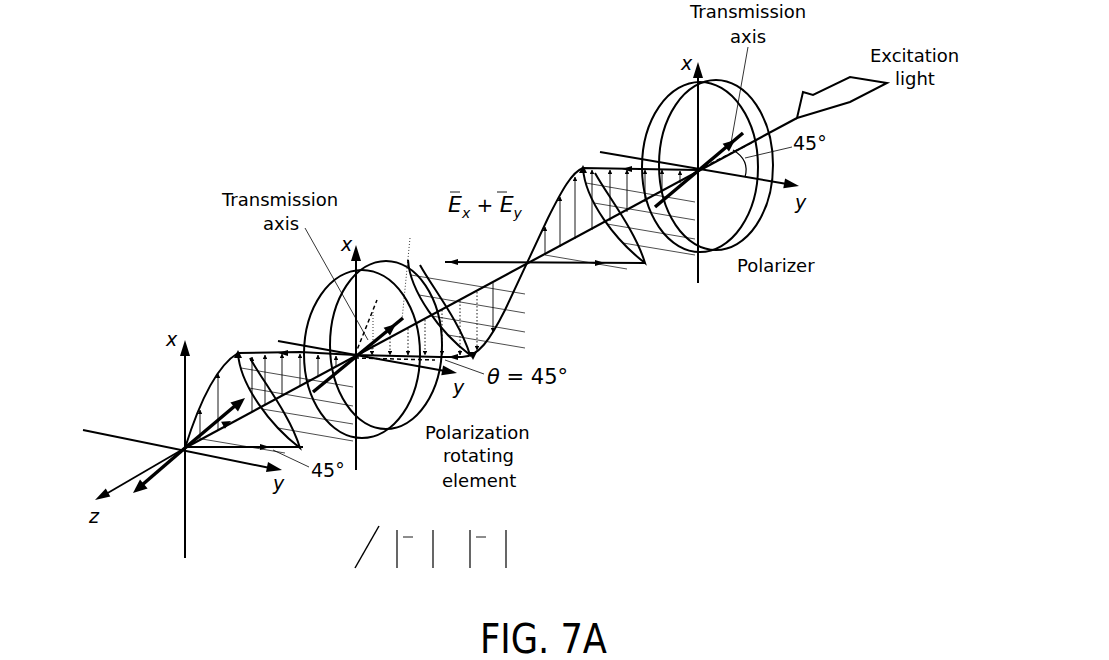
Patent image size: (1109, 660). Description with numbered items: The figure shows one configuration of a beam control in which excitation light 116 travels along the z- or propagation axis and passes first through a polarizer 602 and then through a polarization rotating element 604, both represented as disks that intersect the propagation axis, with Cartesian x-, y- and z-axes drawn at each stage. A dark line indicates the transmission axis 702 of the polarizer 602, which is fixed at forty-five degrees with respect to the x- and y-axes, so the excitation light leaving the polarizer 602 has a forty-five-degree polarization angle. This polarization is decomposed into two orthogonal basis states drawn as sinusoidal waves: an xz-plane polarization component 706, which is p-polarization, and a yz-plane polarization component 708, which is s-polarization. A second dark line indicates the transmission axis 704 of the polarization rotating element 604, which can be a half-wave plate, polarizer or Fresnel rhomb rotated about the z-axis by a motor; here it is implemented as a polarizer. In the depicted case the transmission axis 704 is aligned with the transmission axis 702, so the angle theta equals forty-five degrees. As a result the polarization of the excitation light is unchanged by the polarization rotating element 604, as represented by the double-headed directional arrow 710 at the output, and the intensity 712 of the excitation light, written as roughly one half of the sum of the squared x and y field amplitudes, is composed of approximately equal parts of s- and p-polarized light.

The excitation light 116 is at (850, 105).
The polarizer 602 is at (718, 248).
The polarization rotating element 604 is at (377, 438).
The transmission axis of the polarizer 702 is at (743, 130).
The transmission axis of the polarization rotating element 704 is at (377, 258).
The xz-plane polarization component 706 is at (574, 164).
The yz-plane polarization component 708 is at (567, 267).
The double-headed directional arrow 710 is at (150, 478).
The intensity of the excitation light 712 is at (535, 533).